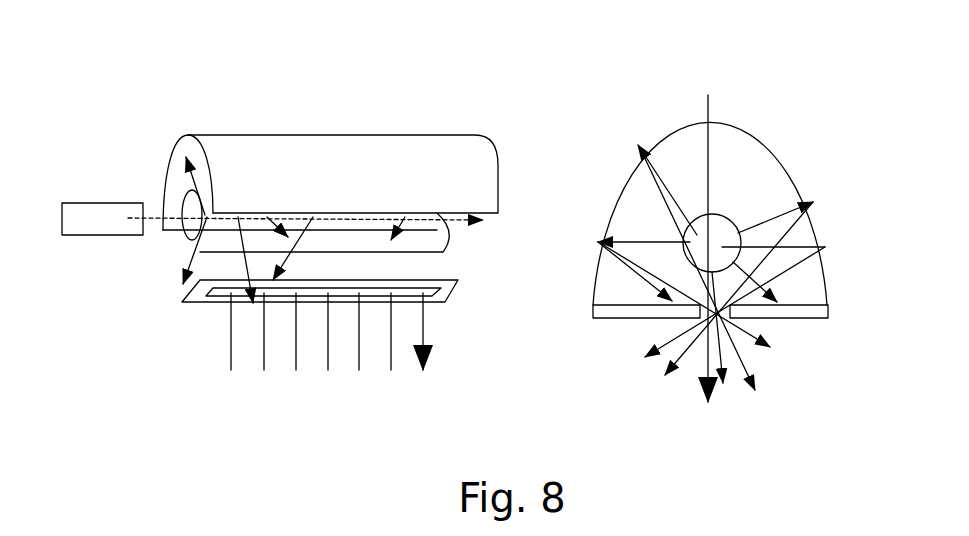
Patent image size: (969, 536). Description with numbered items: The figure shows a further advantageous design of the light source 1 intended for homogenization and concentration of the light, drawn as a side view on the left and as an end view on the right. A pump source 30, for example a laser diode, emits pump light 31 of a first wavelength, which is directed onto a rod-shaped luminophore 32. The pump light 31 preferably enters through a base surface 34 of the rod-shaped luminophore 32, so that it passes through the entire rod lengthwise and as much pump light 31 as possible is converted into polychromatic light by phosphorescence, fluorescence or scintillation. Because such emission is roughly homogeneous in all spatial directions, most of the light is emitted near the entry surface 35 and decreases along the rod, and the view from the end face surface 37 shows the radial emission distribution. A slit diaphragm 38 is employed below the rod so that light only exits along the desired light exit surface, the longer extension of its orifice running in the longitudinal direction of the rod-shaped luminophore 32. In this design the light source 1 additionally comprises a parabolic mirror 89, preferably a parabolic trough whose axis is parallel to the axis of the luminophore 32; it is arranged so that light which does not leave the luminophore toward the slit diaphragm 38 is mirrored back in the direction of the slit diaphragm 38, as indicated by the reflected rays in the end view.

The light source 1 is at (148, 358).
The pump source 30 is at (82, 200).
The pump light 31 is at (132, 223).
The rod-shaped luminophore 32 is at (442, 253).
The base surface 34 is at (185, 205).
The entry surface 35 is at (805, 221).
The end face surface 37 is at (720, 228).
The slit diaphragm 38 is at (433, 302).
The parabolic mirror 89 is at (383, 133).